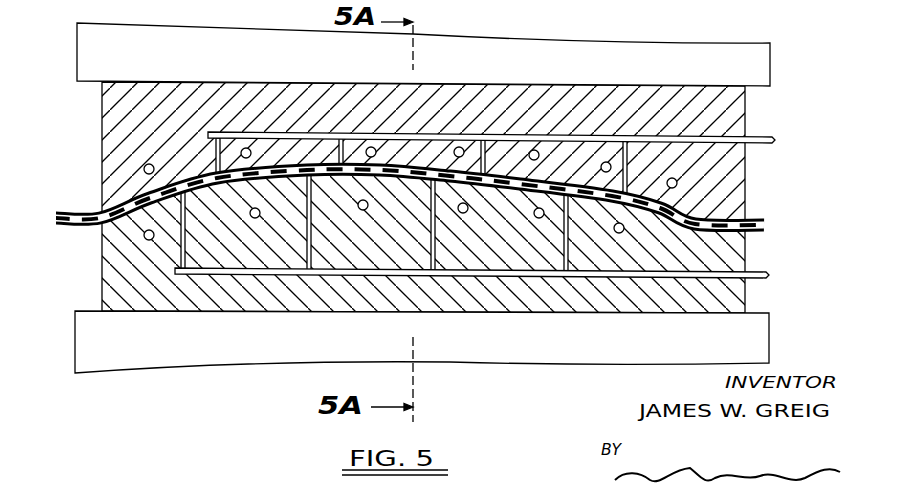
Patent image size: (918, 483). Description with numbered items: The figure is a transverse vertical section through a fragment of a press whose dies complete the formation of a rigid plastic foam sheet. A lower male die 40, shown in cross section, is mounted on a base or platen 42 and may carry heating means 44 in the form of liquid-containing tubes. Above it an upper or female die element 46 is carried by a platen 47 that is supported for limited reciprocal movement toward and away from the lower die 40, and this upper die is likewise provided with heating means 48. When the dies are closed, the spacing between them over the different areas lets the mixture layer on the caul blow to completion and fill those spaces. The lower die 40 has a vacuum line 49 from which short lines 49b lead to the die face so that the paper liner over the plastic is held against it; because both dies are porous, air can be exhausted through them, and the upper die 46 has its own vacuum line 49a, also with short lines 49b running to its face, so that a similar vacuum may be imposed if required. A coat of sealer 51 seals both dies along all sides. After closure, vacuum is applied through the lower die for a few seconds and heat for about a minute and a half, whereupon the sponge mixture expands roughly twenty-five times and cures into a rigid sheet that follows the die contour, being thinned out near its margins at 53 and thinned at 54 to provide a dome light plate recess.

The lower male die 40 is at (745, 297).
The base or platen 42 is at (591, 353).
The heating means 44 is at (538, 219).
The upper or female die element 46 is at (745, 116).
The platen 47 is at (770, 68).
The heating means 48 is at (606, 162).
The vacuum line 49 is at (769, 275).
The vacuum line 49a is at (642, 135).
The short lines 49b is at (223, 168).
The coat of sealer 51 is at (442, 197).
The thinned margin 53 is at (157, 195).
The dome light plate recess 54 is at (331, 167).